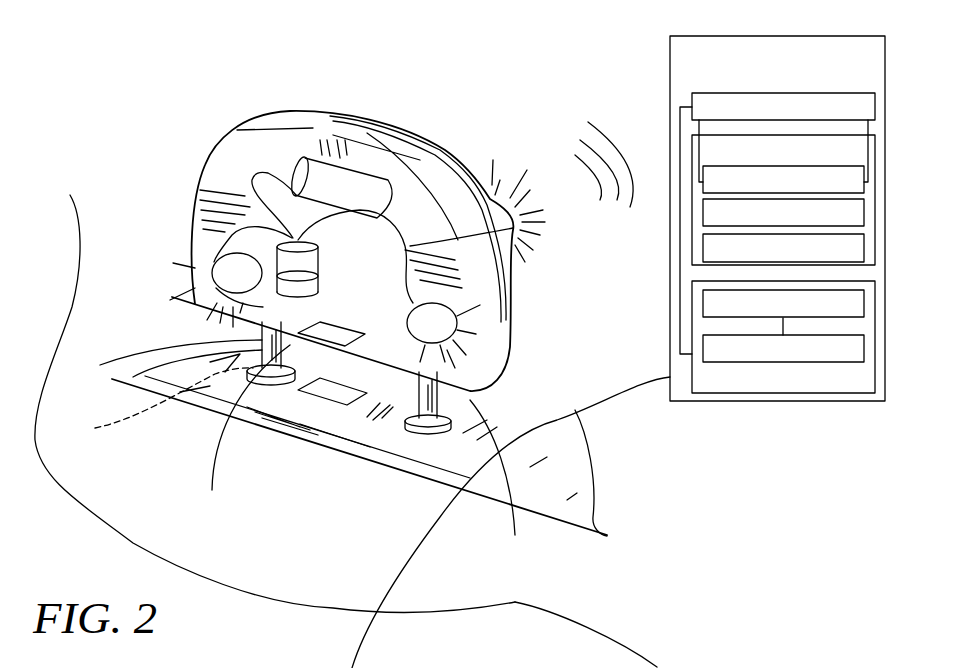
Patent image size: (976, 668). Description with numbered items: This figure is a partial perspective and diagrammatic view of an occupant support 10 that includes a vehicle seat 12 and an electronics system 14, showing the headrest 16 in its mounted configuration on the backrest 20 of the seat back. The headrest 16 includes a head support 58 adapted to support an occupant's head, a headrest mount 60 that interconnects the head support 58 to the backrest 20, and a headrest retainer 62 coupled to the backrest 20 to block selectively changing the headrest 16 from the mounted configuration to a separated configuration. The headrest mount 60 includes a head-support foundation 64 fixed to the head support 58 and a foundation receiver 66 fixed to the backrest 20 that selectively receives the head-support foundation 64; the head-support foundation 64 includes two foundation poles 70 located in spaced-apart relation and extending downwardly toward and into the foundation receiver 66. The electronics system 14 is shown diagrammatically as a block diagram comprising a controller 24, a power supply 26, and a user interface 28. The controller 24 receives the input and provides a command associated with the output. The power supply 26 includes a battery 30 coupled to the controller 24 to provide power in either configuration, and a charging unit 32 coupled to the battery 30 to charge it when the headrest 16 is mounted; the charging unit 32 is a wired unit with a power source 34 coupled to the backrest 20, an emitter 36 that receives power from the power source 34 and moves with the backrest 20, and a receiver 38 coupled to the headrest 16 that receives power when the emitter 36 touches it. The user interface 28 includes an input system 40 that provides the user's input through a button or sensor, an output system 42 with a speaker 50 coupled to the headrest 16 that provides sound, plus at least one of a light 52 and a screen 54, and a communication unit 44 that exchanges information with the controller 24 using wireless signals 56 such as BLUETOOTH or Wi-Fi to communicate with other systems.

The occupant support 10 is at (662, 22).
The vehicle seat 12 is at (76, 158).
The electronics system 14 is at (727, 36).
The headrest 16 is at (270, 72).
The backrest 20 is at (593, 470).
The controller 24 is at (875, 98).
The power supply 26 is at (875, 289).
The user interface 28 is at (875, 145).
The battery 30 is at (245, 322).
The charging unit 32 is at (864, 349).
The power source 34 is at (453, 433).
The emitter 36 is at (318, 392).
The receiver 38 is at (336, 333).
The input system 40 is at (864, 186).
The output system 42 is at (864, 213).
The communication unit 44 is at (864, 247).
The speaker 50 is at (220, 260).
The light 52 is at (513, 238).
The screen 54 is at (420, 133).
The wireless signals 56 is at (622, 160).
The head support 58 is at (280, 121).
The headrest mount 60 is at (60, 425).
The headrest retainer 62 is at (158, 403).
The head-support foundation 64 is at (515, 602).
The foundation receiver 66 is at (515, 602).
The foundation poles 70 is at (160, 350).